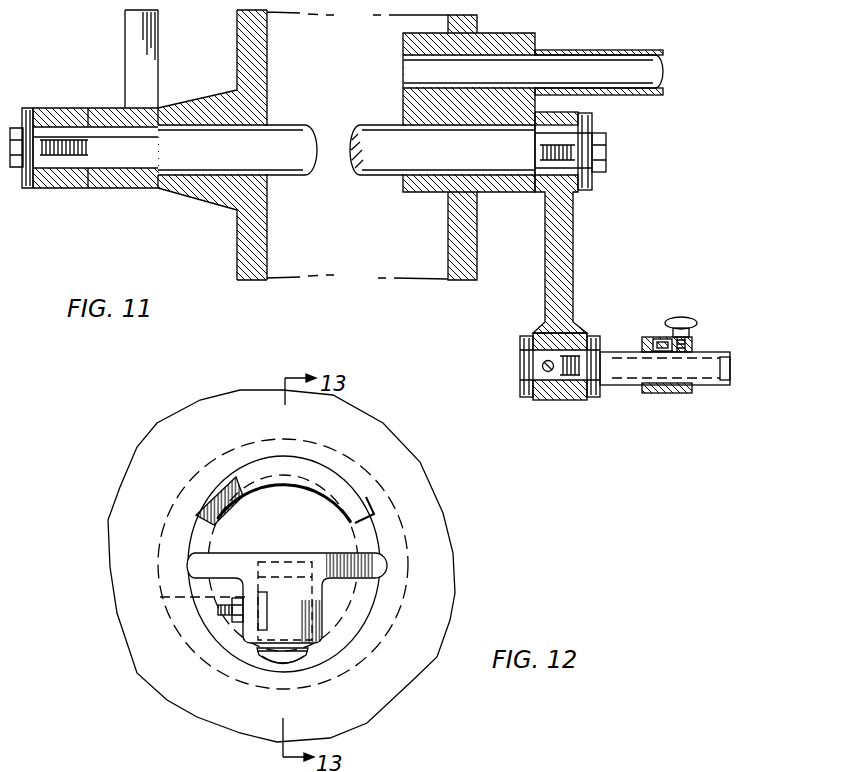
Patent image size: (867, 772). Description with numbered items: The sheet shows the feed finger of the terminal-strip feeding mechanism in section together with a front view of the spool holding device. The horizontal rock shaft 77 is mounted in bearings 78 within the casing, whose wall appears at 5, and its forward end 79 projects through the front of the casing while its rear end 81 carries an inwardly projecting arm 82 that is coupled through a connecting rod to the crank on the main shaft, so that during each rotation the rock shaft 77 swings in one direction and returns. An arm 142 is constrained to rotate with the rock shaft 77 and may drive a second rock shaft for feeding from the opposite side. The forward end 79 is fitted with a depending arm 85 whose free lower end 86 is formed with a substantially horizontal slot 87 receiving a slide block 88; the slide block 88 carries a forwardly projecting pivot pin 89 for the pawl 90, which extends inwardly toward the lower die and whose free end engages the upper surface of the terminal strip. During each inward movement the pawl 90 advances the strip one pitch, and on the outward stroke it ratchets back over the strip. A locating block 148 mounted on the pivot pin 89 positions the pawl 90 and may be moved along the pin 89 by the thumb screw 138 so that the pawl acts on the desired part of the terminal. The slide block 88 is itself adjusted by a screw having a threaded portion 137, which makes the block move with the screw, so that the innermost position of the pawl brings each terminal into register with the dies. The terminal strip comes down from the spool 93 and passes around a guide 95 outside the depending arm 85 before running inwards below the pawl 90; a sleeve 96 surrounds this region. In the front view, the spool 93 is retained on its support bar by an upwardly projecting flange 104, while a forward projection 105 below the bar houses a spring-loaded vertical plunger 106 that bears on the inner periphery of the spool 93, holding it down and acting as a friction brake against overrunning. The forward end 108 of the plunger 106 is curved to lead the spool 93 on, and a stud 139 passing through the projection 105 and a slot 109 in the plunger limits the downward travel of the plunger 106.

In FIG. 11, the plate 5 is at (257, 225).
In FIG. 11, the rock shaft 77 is at (378, 160).
In FIG. 11, the bearings 78 is at (180, 122).
In FIG. 11, the forward end of rock shaft 79 is at (563, 132).
In FIG. 11, the rear end of rock shaft 81 is at (102, 140).
In FIG. 11, the inwardly projecting arm 82 is at (53, 108).
In FIG. 11, the depending arm 85 is at (568, 220).
In FIG. 11, the free lower end of depending arm 86 is at (565, 383).
In FIG. 11, the horizontal slot 87 is at (542, 377).
In FIG. 11, the slide block 88 is at (522, 372).
In FIG. 11, the pivot pin 89 is at (702, 363).
In FIG. 11, the pawl 90 is at (665, 390).
In FIG. 12, the spool 93 is at (440, 540).
In FIG. 11, the guide 95 is at (570, 50).
In FIG. 11, the shaft 96 is at (605, 65).
In FIG. 12, the upwardly projecting flange 104 is at (335, 477).
In FIG. 12, the forward projection 105 is at (303, 610).
In FIG. 12, the vertical plunger 106 is at (307, 663).
In FIG. 12, the forward end of plunger 108 is at (285, 668).
In FIG. 12, the slot 109 is at (160, 597).
In FIG. 11, the threaded portion 137 is at (542, 365).
In FIG. 11, the thumb screw 138 is at (680, 322).
In FIG. 12, the stud 139 is at (222, 613).
In FIG. 11, the arm 142 is at (132, 28).
In FIG. 11, the locating block 148 is at (648, 337).